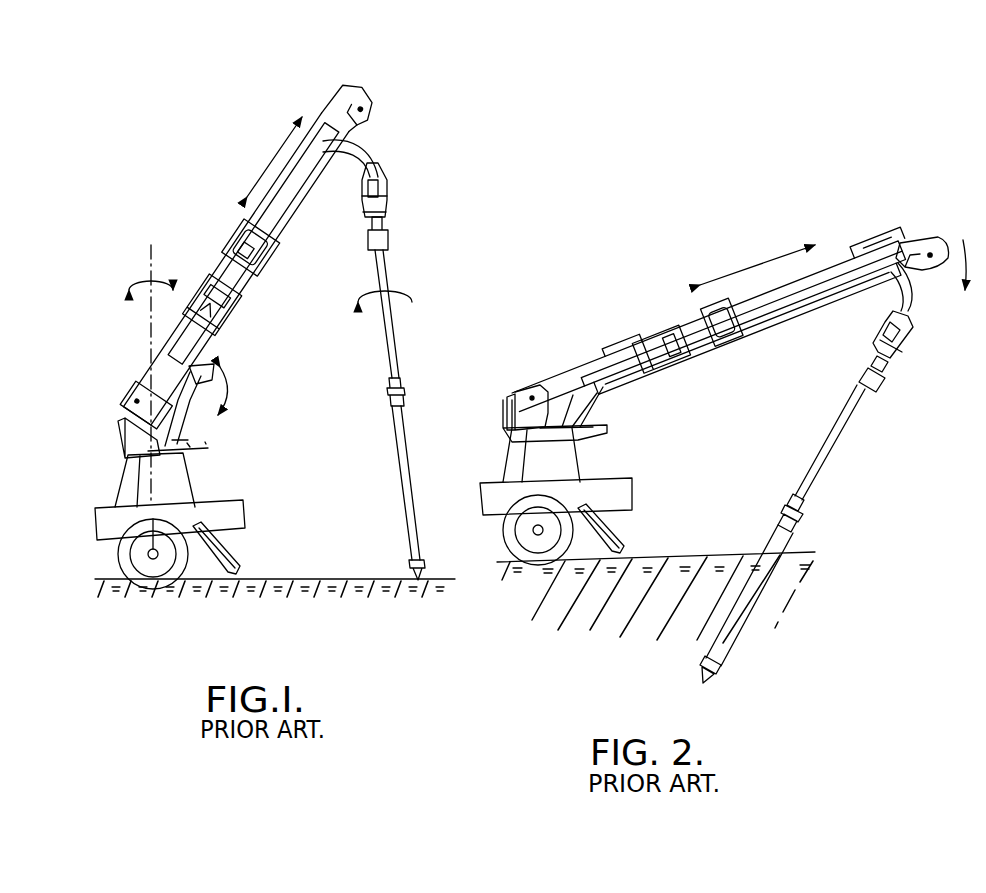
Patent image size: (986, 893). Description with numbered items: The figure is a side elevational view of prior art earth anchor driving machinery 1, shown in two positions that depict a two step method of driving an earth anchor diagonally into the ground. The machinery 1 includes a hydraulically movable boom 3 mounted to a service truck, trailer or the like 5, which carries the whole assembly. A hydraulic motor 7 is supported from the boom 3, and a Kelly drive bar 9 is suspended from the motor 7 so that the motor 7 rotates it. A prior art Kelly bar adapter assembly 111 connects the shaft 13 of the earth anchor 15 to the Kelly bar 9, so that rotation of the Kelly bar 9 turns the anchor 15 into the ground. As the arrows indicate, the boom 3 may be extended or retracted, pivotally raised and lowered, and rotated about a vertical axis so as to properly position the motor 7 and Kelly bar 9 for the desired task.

In FIG. 1, the earth anchor driving machinery 1 is at (218, 220).
In FIG. 2, the earth anchor driving machinery 1 is at (858, 227).
In FIG. 1, the boom 3 is at (152, 360).
In FIG. 2, the boom 3 is at (573, 370).
In FIG. 1, the service truck 5 is at (177, 493).
In FIG. 2, the service truck 5 is at (577, 468).
In FIG. 1, the hydraulic motor 7 is at (388, 180).
In FIG. 2, the hydraulic motor 7 is at (910, 333).
In FIG. 1, the Kelly drive bar 9 is at (398, 347).
In FIG. 2, the Kelly drive bar 9 is at (835, 462).
In FIG. 1, the Kelly bar adapter assembly 111 is at (408, 380).
In FIG. 2, the Kelly bar adapter assembly 111 is at (814, 510).
In FIG. 1, the shaft 13 is at (408, 432).
In FIG. 2, the shaft 13 is at (790, 543).
In FIG. 1, the earth anchor 15 is at (433, 557).
In FIG. 2, the earth anchor 15 is at (719, 675).